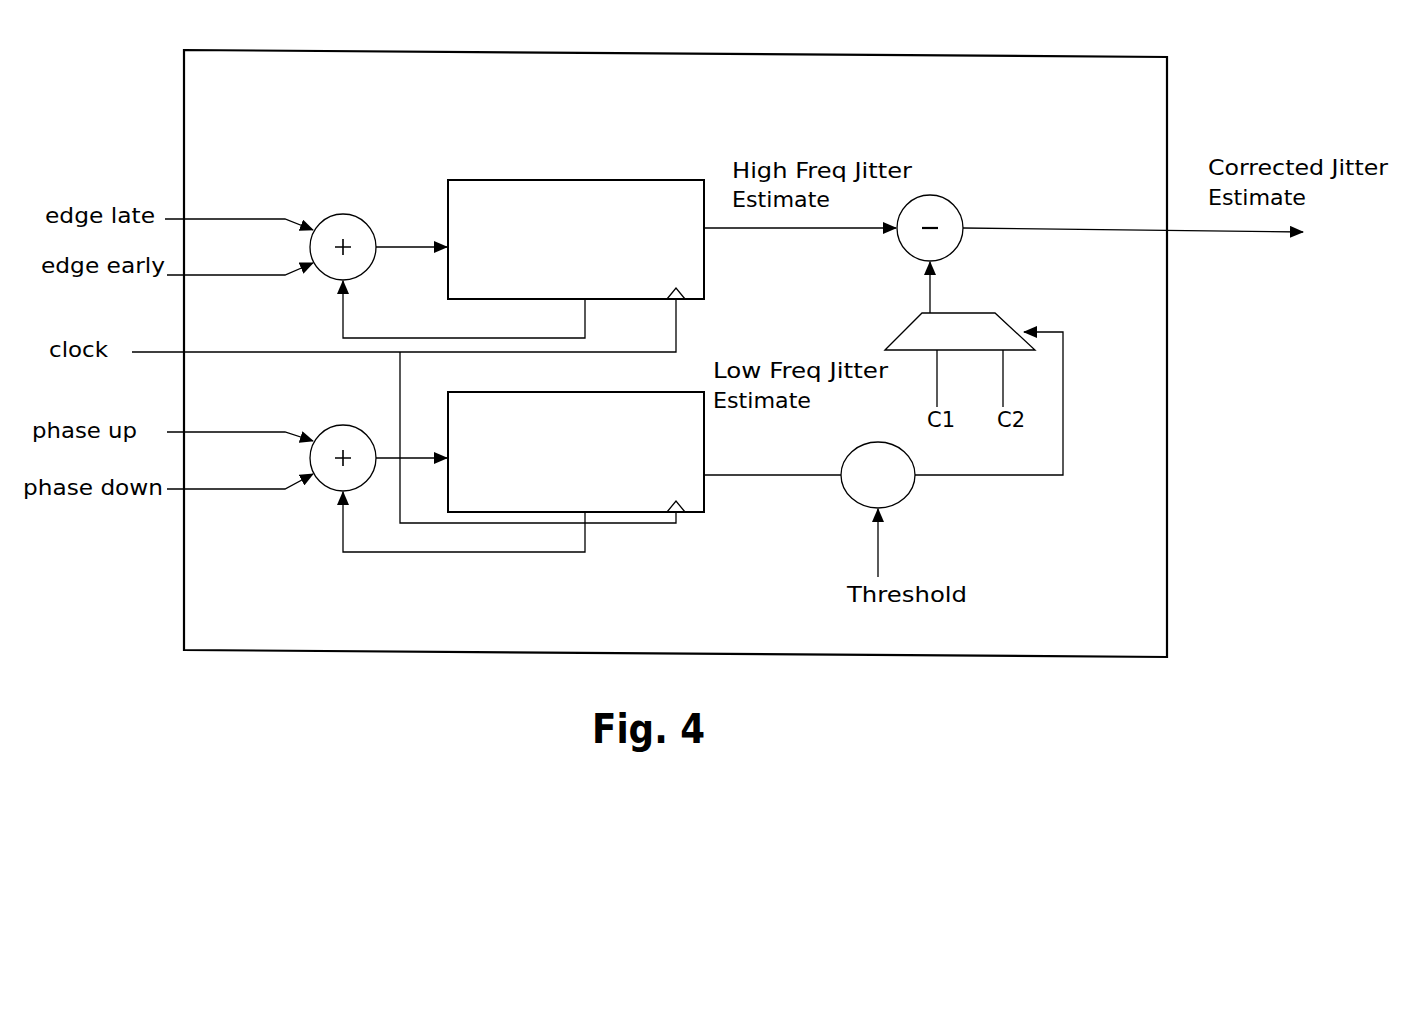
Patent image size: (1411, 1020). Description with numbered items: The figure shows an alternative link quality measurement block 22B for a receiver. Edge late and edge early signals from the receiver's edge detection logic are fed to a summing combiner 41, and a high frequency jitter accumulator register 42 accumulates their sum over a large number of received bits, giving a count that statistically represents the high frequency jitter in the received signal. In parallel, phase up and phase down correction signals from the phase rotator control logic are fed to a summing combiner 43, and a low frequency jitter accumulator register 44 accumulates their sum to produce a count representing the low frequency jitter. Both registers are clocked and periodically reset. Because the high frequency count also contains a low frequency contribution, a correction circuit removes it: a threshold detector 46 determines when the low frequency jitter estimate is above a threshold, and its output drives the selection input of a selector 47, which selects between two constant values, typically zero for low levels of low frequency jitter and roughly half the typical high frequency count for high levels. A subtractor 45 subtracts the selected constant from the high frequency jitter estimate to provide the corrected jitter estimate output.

The link quality measurement block 22B is at (675, 353).
The summing combiner 41 is at (329, 214).
The high frequency jitter accumulator register 42 is at (619, 259).
The summing combiner 43 is at (333, 424).
The low frequency jitter accumulator register 44 is at (592, 472).
The subtractor 45 is at (955, 205).
The threshold detector 46 is at (875, 435).
The selector 47 is at (989, 307).